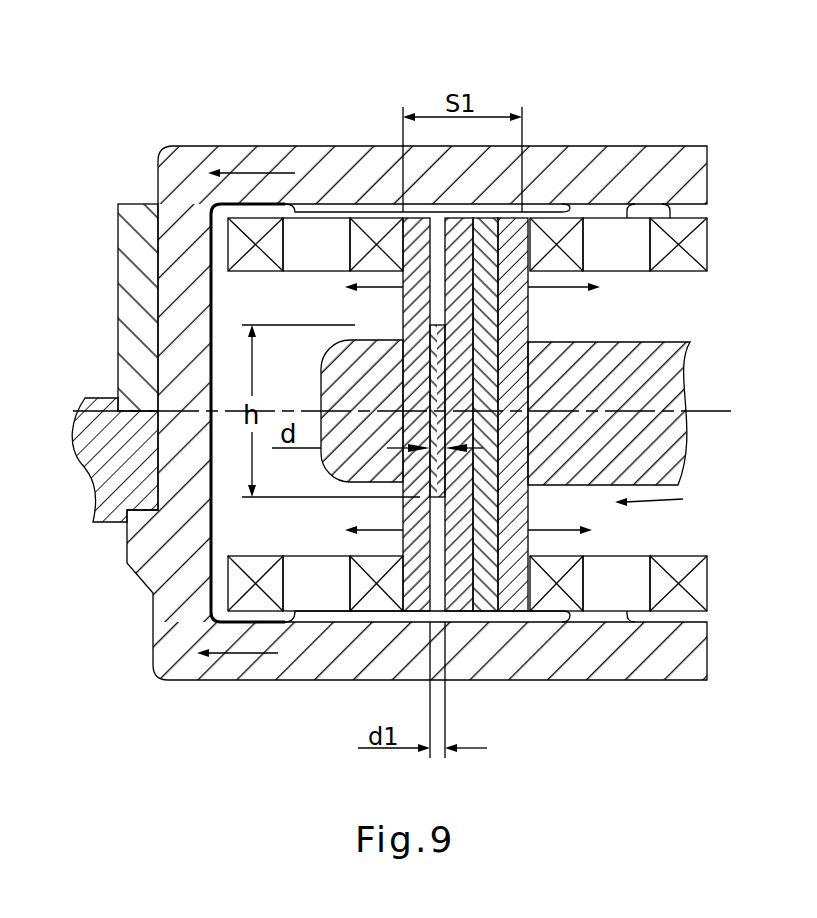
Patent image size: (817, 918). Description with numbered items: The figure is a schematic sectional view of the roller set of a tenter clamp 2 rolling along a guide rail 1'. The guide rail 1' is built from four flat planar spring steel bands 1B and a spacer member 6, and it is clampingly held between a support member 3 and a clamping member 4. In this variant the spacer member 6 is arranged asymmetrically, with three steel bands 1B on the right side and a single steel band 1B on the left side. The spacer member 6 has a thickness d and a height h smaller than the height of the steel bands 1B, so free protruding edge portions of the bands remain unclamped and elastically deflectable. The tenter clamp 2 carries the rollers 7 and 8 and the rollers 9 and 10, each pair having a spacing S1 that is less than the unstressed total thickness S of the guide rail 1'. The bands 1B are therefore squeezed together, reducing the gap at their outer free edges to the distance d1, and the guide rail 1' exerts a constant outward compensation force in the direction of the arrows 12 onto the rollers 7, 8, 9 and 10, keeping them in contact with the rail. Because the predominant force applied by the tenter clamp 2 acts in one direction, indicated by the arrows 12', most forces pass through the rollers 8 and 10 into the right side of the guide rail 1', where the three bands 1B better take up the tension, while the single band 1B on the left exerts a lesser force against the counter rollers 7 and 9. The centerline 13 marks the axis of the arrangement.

The guide rail 1' is at (664, 496).
The flat planar spring steel bands 1B is at (413, 582).
The tenter clamp 2 is at (572, 128).
The support member 3 is at (620, 377).
The clamping member 4 is at (362, 343).
The spacer member 6 is at (450, 340).
The roller 7 is at (363, 235).
The roller 8 is at (670, 217).
The roller 9 is at (268, 582).
The roller 10 is at (648, 587).
The arrows 12 is at (474, 411).
The arrows 12' is at (266, 417).
The axis of rotation 13 is at (712, 411).